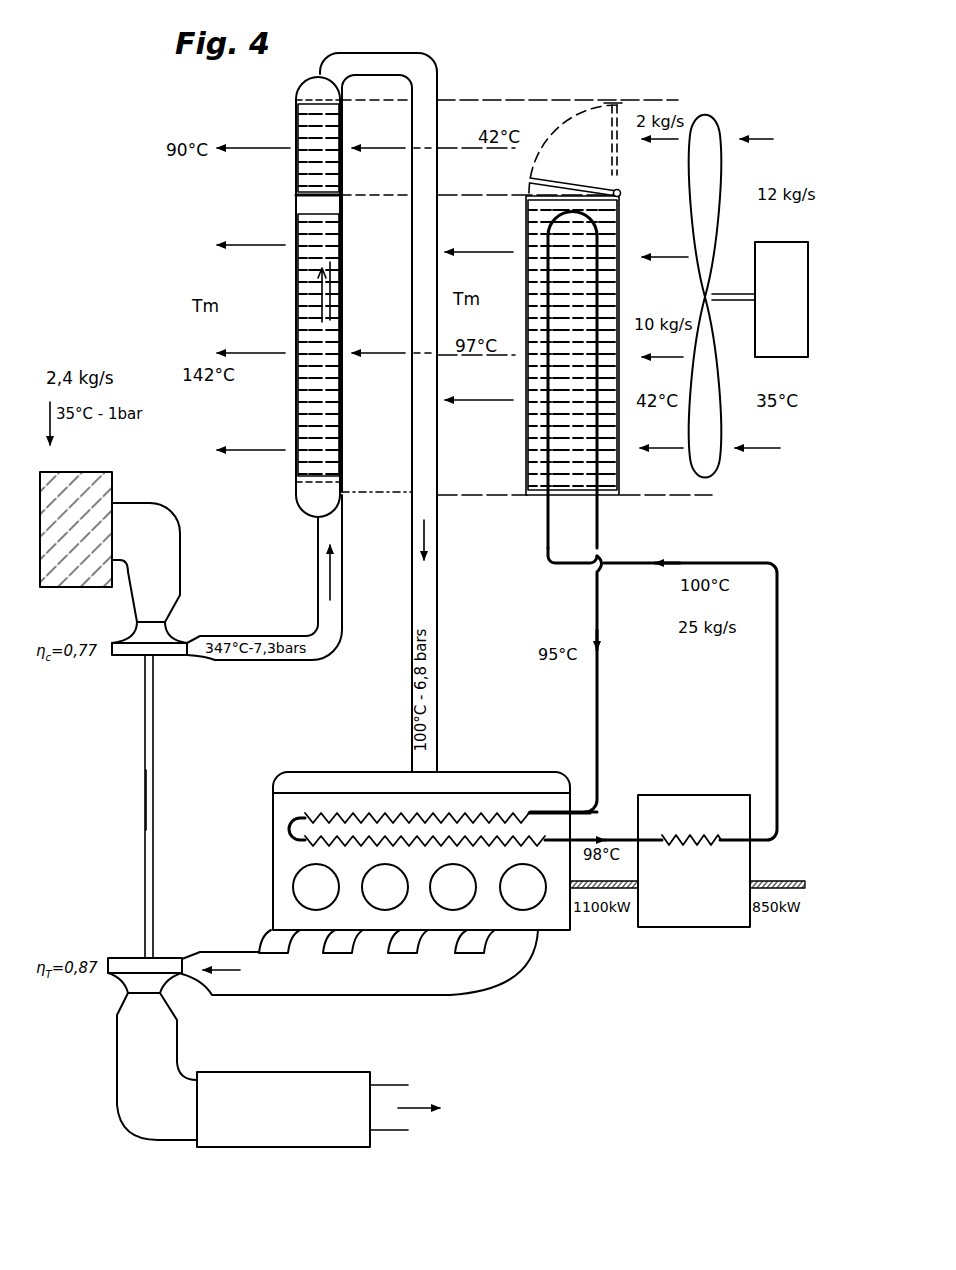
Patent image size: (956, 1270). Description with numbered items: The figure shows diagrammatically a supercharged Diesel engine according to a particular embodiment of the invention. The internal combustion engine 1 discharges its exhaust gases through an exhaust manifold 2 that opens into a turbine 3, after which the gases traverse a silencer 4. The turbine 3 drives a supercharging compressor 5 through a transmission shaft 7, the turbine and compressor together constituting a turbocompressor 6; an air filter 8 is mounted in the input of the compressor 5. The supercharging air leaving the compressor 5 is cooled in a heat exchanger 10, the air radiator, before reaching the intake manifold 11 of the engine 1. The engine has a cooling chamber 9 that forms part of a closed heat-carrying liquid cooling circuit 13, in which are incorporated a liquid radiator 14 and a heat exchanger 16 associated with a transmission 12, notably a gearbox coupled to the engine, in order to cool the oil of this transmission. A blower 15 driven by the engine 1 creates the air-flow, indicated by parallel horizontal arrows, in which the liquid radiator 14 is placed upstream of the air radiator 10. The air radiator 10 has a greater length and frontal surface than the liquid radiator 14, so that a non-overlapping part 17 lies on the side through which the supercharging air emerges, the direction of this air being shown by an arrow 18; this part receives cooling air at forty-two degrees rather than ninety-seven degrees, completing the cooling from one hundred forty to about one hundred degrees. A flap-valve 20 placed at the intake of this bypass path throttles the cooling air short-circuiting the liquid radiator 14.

The internal combustion engine 1 is at (273, 856).
The exhaust manifold 2 is at (410, 996).
The turbine 3 is at (165, 958).
The silencer 4 is at (334, 1090).
The supercharging compressor 5 is at (170, 633).
The turbocompressor 6 is at (125, 800).
The transmission shaft 7 is at (155, 820).
The air filter 8 is at (102, 477).
The cooling chamber 9 is at (355, 812).
The heat exchanger 10 is at (303, 418).
The intake manifold 11 is at (478, 775).
The transmission 12 is at (690, 925).
The closed heat-carrying liquid cooling circuit 13 is at (777, 706).
The heat exchanger 14 is at (540, 500).
The blower 15 is at (722, 280).
The heat exchanger 16 is at (705, 845).
The non-overlapping part 17 is at (364, 105).
The arrow 18 is at (334, 275).
The flap-valve 20 is at (572, 178).